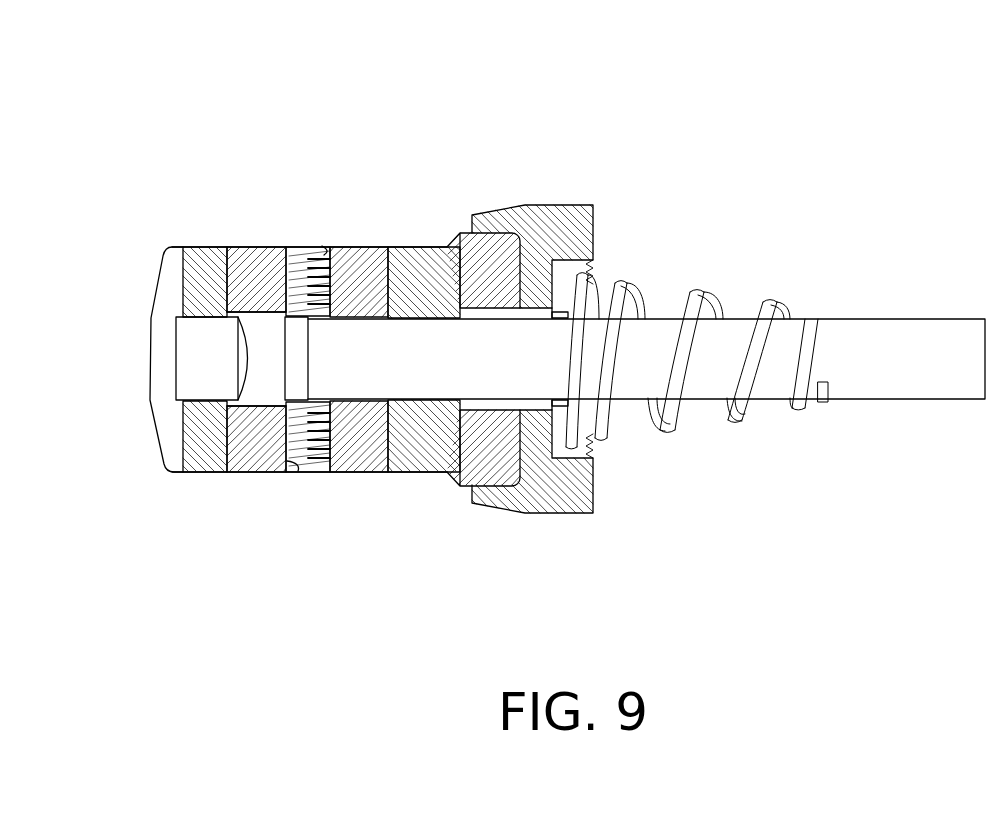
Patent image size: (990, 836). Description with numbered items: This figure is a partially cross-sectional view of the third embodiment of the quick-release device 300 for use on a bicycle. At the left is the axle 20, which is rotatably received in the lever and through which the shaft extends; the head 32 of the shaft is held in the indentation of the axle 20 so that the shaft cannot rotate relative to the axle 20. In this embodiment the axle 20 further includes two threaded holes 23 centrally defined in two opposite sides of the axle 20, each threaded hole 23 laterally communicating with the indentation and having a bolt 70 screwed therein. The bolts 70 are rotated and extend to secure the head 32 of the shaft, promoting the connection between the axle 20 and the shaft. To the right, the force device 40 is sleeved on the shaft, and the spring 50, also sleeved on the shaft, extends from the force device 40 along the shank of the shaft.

The quick-release device 300 is at (400, 94).
The axle 20 is at (252, 262).
The bolt 70 is at (305, 262).
The threaded hole 23 is at (322, 246).
The head 32 is at (254, 360).
The force device 40 is at (608, 166).
The spring 50 is at (677, 408).